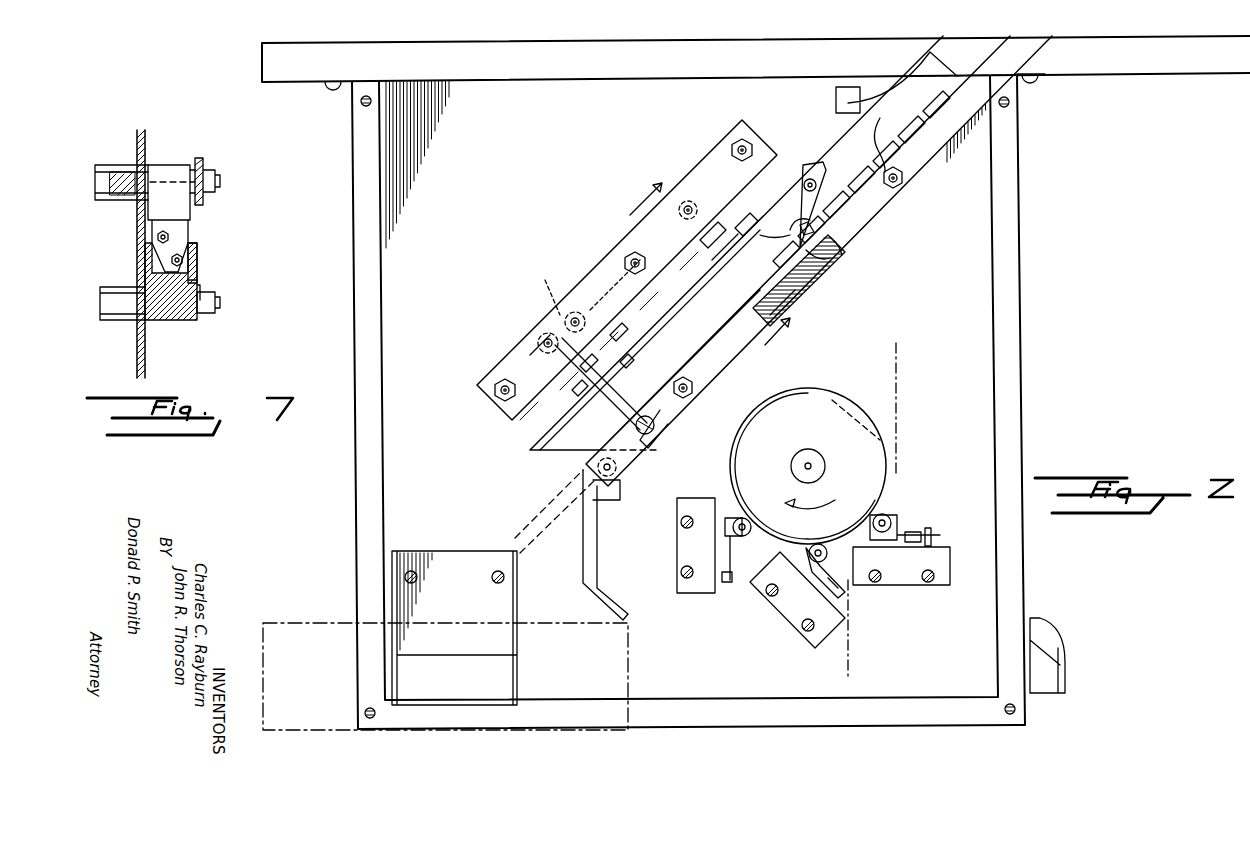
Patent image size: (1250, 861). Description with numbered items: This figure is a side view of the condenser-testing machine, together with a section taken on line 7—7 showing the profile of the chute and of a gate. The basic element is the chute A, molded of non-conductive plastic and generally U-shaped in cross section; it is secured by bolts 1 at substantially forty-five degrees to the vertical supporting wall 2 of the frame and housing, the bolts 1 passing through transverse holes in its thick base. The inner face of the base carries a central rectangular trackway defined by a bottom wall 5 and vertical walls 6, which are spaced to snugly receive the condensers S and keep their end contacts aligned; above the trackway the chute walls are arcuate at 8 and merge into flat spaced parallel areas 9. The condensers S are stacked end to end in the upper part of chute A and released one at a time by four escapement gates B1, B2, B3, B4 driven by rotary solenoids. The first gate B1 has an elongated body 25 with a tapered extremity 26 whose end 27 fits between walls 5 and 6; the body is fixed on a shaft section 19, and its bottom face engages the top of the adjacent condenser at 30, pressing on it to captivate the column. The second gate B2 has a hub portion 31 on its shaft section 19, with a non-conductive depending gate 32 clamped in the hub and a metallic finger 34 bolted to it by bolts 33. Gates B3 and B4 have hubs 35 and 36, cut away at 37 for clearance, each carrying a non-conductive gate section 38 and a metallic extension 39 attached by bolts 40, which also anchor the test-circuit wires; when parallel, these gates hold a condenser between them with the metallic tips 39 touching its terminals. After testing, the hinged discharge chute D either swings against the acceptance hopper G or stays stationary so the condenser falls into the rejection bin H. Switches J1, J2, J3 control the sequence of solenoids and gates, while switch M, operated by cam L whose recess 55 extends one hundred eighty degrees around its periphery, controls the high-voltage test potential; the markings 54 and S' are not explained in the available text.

In FIG. 2, the bolts 1 is at (700, 400).
In FIG. 7, the bolts 1 is at (220, 302).
In FIG. 2, the vertical supporting wall 2 is at (968, 257).
In FIG. 7, the vertical supporting wall 2 is at (145, 375).
In FIG. 2, the bottom wall 5 is at (790, 312).
In FIG. 7, the bottom wall 5 is at (185, 320).
In FIG. 2, the vertical walls 6 is at (830, 660).
In FIG. 7, the vertical walls 6 is at (200, 290).
In FIG. 2, the section line 7— 7 is at (717, 260).
In FIG. 7, the arcuate walls 8 is at (197, 270).
In FIG. 7, the flat spaced parallel areas 9 is at (197, 250).
In FIG. 2, the shaft section 19 is at (535, 338).
In FIG. 2, the elongated body 25 is at (800, 215).
In FIG. 2, the tapered extremity 26 is at (790, 225).
In FIG. 2, the end 27 is at (768, 232).
In FIG. 2, the engagement point 30 is at (835, 250).
In FIG. 2, the hub portion 31 is at (680, 178).
In FIG. 2, the depending gate 32 is at (700, 250).
In FIG. 2, the bolts 33 is at (712, 266).
In FIG. 2, the metallic finger 34 is at (805, 290).
In FIG. 2, the hub 35 is at (573, 290).
In FIG. 2, the hub 36 is at (535, 350).
In FIG. 2, the cut-away 37 is at (543, 289).
In FIG. 2, the gate section 38 is at (580, 370).
In FIG. 2, the metallic extension 39 is at (660, 430).
In FIG. 2, the bolts 40 is at (630, 350).
In FIG. 2, the flap 54 is at (855, 392).
In FIG. 2, the recess 55 is at (735, 458).
In FIG. 2, the chute A is at (872, 232).
In FIG. 7, the chute A is at (170, 325).
In FIG. 2, the first escapement gate B1 is at (815, 165).
In FIG. 2, the second escapement gate B2 is at (748, 230).
In FIG. 7, the second escapement gate B2 is at (190, 220).
In FIG. 2, the third escapement gate B3 is at (648, 330).
In FIG. 2, the fourth escapement gate B4 is at (580, 392).
In FIG. 2, the hinged discharge chute D is at (600, 560).
In FIG. 2, the acceptance hopper G is at (405, 550).
In FIG. 2, the rejection bin H is at (630, 652).
In FIG. 2, the switch J1 is at (897, 528).
In FIG. 2, the switch J2 is at (826, 560).
In FIG. 2, the switch J3 is at (733, 545).
In FIG. 2, the cam L is at (795, 395).
In FIG. 2, the switch M is at (840, 625).
In FIG. 2, the condensers S is at (883, 134).
In FIG. 2, the spring S' is at (837, 262).